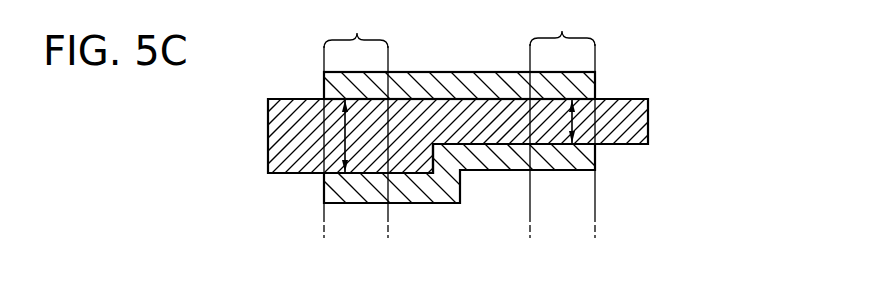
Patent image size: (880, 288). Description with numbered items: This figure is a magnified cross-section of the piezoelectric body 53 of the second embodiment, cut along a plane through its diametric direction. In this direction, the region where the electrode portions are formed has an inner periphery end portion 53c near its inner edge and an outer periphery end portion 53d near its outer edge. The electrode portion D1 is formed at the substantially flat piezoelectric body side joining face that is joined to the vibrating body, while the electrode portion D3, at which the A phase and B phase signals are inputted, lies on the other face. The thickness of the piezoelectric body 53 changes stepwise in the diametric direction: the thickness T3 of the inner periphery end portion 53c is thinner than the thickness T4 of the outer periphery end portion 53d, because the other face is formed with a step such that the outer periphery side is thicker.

The piezoelectric body 53 is at (648, 122).
The inner periphery end portion 53c is at (562, 121).
The outer periphery end portion 53d is at (356, 122).
The electrode portion D1 is at (468, 72).
The electrode portion D3 is at (508, 158).
The thickness T3 is at (572, 120).
The thickness T4 is at (343, 137).